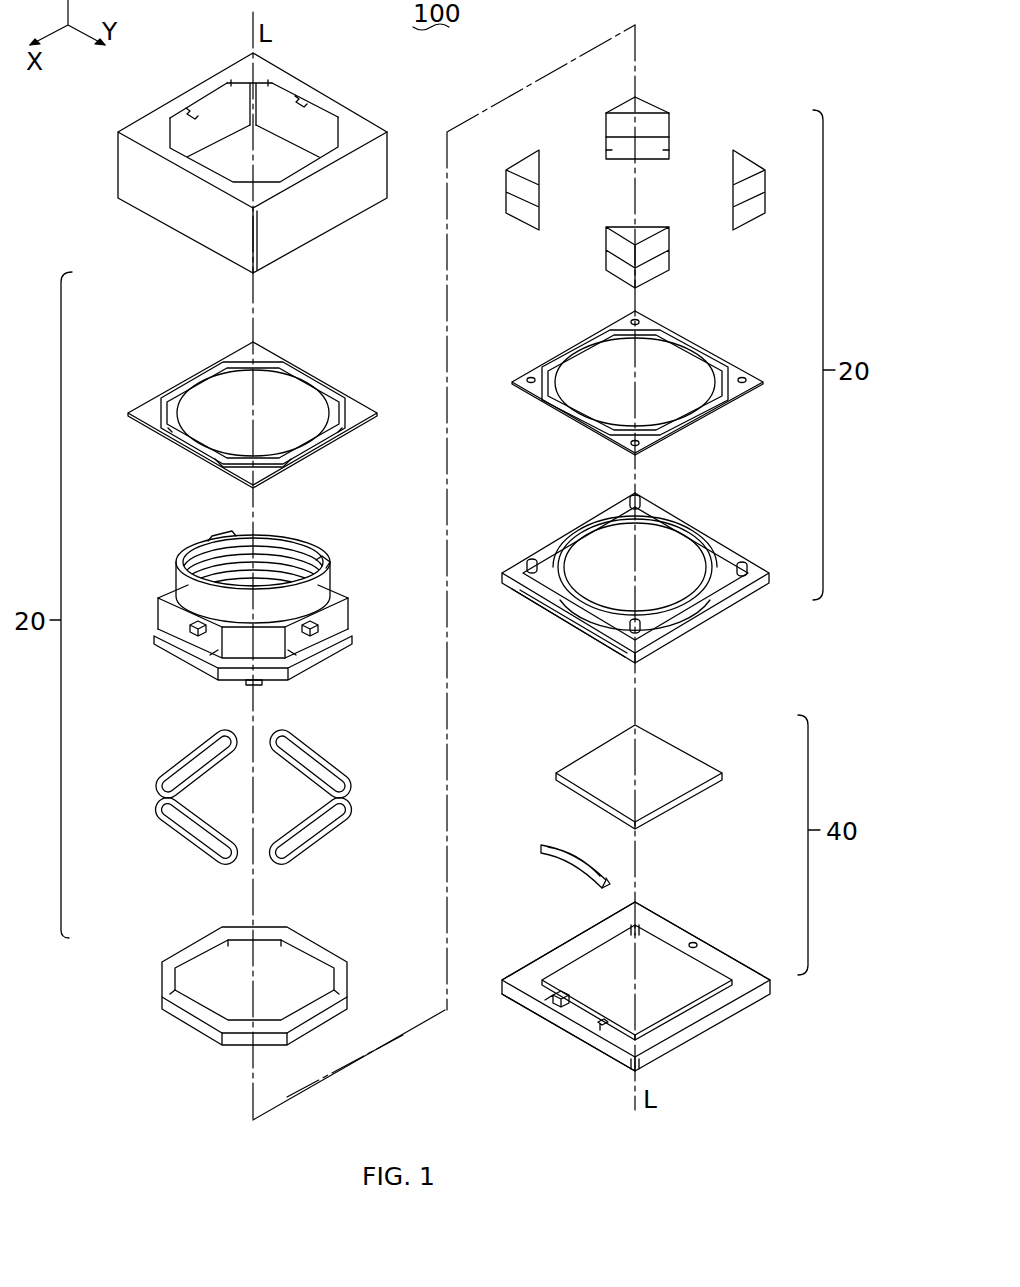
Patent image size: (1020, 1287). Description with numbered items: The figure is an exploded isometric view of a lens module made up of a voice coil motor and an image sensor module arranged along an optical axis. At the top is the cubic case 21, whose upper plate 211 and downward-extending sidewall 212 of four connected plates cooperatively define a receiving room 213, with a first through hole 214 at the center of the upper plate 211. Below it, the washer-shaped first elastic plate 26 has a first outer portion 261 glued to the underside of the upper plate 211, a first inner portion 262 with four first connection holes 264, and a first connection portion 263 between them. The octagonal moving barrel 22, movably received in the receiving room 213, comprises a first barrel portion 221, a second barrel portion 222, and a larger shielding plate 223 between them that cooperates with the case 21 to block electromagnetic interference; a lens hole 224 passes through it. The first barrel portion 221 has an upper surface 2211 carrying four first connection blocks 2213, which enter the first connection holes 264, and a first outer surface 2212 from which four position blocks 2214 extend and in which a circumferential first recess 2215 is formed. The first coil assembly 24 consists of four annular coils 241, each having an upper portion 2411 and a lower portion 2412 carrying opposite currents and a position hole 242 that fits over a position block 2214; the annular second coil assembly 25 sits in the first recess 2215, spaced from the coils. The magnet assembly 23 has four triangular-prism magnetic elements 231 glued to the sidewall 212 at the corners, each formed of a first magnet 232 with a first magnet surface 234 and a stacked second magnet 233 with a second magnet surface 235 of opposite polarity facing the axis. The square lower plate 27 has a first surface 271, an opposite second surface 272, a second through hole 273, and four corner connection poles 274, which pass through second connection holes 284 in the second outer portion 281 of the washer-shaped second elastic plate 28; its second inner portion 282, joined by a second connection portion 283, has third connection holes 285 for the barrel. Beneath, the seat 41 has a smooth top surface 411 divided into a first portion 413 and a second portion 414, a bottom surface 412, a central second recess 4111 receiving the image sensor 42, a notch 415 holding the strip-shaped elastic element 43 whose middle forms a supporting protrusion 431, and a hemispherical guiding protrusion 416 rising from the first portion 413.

The case 21 is at (182, 218).
The upper plate 211 is at (340, 128).
The sidewall 212 is at (322, 217).
The receiving room 213 is at (313, 112).
The first through hole 214 is at (212, 90).
The moving barrel 22 is at (165, 615).
The first barrel portion 221 is at (325, 608).
The second barrel portion 222 is at (320, 668).
The shielding plate 223 is at (340, 627).
The lens hole 224 is at (190, 570).
The upper surface 2211 is at (322, 565).
The first outer surface 2212 is at (262, 652).
The first connection blocks 2213 is at (217, 540).
The position blocks 2214 is at (193, 632).
The first recess 2215 is at (236, 663).
The magnet assembly 23 is at (745, 215).
The magnetic elements 231 is at (670, 130).
The first magnet 232 is at (652, 160).
The second magnet 233 is at (650, 108).
The first magnet surface 234 is at (612, 146).
The second magnet surface 235 is at (606, 122).
The first coil assembly 24 is at (160, 754).
The coils 241 is at (155, 815).
The position hole 242 is at (312, 828).
The upper portion 2411 is at (315, 742).
The lower portion 2412 is at (320, 770).
The second coil assembly 25 is at (187, 947).
The first elastic plate 26 is at (148, 408).
The first outer portion 261 is at (262, 355).
The first inner portion 262 is at (330, 400).
The first connection portion 263 is at (305, 380).
The first connection holes 264 is at (300, 462).
The lower plate 27 is at (735, 555).
The first surface 271 is at (615, 505).
The second surface 272 is at (570, 625).
The second through hole 273 is at (596, 560).
The connection poles 274 is at (640, 495).
The second elastic plate 28 is at (738, 368).
The second outer portion 281 is at (645, 322).
The second inner portion 282 is at (552, 358).
The second connection portion 283 is at (540, 365).
The second connection holes 284 is at (628, 318).
The third connection holes 285 is at (705, 352).
The seat 41 is at (745, 960).
The top surface 411 is at (568, 945).
The bottom surface 412 is at (545, 1022).
The first portion 413 is at (650, 905).
The second portion 414 is at (540, 985).
The notch 415 is at (580, 1015).
The guiding protrusion 416 is at (695, 945).
The second recess 4111 is at (672, 1008).
The image sensor 42 is at (680, 770).
The elastic element 43 is at (540, 848).
The supporting protrusion 431 is at (570, 862).